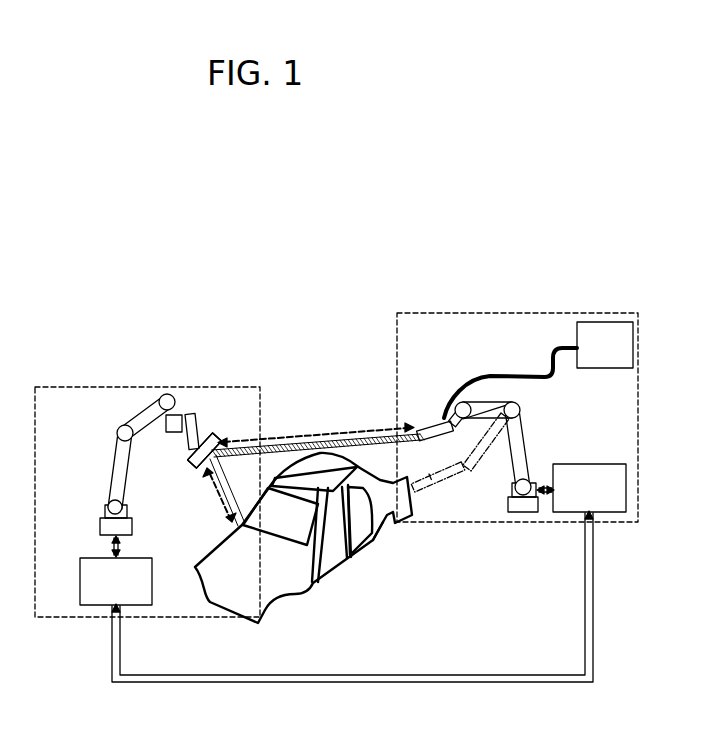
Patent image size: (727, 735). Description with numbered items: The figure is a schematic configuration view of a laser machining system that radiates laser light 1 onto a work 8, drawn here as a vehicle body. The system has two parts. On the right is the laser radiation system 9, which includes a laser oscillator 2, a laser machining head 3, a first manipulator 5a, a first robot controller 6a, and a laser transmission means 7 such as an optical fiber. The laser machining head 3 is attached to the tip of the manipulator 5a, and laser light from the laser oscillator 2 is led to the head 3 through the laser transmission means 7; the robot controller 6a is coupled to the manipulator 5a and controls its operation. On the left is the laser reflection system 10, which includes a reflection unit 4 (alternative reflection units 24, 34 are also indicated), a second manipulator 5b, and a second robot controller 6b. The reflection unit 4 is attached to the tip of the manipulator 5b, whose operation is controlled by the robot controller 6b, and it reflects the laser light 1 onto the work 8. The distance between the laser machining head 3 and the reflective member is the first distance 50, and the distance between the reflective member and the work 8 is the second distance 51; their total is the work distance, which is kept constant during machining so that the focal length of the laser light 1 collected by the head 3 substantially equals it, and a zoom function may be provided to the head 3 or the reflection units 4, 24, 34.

The laser light 1 is at (318, 440).
The laser oscillator 2 is at (605, 345).
The laser machining head 3 is at (432, 423).
The reflection unit 4 is at (215, 435).
The reflection unit 24 is at (219, 405).
The reflection unit 34 is at (231, 405).
The manipulator 5a is at (527, 447).
The manipulator 5b is at (113, 472).
The robot controller 6a is at (589, 488).
The robot controller 6b is at (116, 581).
The laser transmission means 7 is at (515, 380).
The work 8 is at (332, 578).
The laser radiation system 9 is at (517, 407).
The laser reflection system 10 is at (147, 491).
The first distance 50 is at (323, 430).
The second distance 51 is at (218, 500).